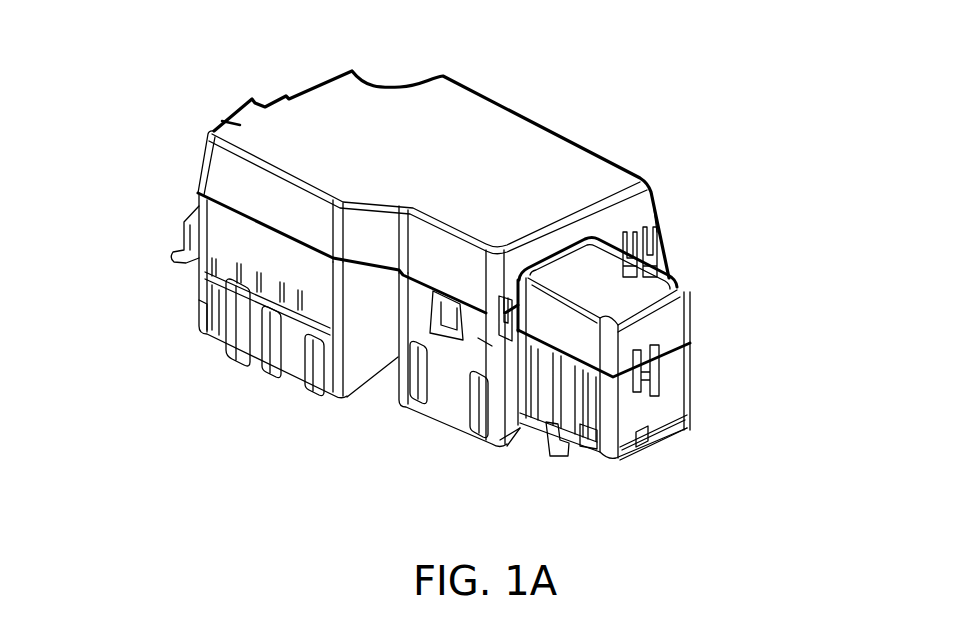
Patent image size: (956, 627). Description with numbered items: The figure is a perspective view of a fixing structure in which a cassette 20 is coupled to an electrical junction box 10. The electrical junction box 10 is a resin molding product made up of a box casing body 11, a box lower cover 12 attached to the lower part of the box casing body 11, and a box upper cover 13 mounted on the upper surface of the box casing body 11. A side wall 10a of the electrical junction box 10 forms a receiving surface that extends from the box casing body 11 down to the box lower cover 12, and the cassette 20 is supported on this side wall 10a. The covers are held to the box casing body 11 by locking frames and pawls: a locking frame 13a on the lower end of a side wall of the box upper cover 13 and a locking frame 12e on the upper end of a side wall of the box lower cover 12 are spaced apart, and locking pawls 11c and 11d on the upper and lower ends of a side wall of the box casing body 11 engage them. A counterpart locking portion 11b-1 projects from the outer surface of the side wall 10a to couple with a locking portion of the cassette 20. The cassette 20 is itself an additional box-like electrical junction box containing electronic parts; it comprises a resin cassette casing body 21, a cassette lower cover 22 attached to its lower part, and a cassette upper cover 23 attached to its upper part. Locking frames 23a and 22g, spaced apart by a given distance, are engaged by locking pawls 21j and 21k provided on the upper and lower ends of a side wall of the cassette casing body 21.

The electrical junction box 10 is at (473, 89).
The side wall 10a is at (518, 423).
The box casing body 11 is at (198, 243).
The counterpart locking portion 11b-1 is at (486, 343).
The locking pawl 11c is at (624, 228).
The locking pawl 11d is at (198, 302).
The box lower cover 12 is at (200, 297).
The locking frame 12e is at (249, 340).
The box upper cover 13 is at (313, 86).
The locking frame 13a is at (662, 224).
The cassette 20 is at (677, 280).
The cassette casing body 21 is at (690, 384).
The locking pawl 21j is at (677, 366).
The locking pawl 21k is at (578, 445).
The cassette lower cover 22 is at (677, 440).
The locking frame 22g is at (590, 447).
The cassette upper cover 23 is at (685, 302).
The locking frame 23a is at (642, 447).